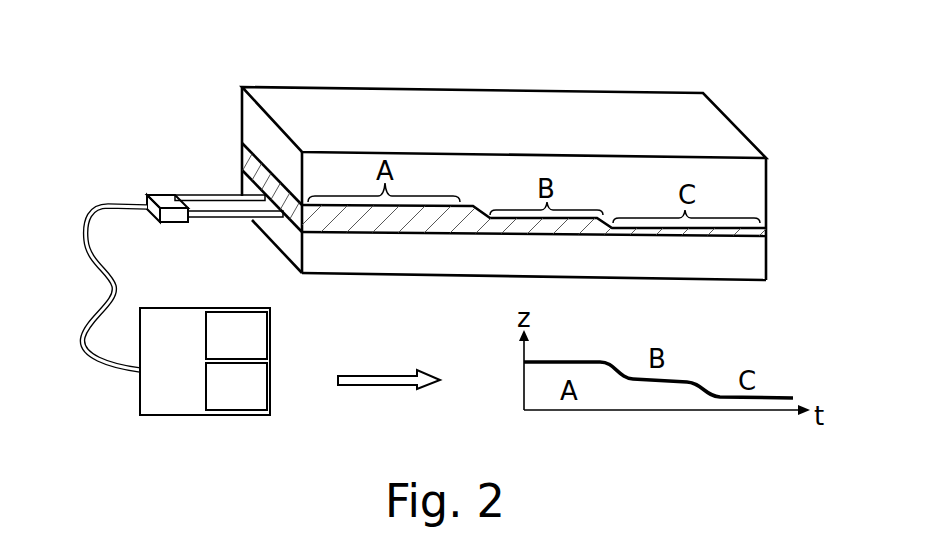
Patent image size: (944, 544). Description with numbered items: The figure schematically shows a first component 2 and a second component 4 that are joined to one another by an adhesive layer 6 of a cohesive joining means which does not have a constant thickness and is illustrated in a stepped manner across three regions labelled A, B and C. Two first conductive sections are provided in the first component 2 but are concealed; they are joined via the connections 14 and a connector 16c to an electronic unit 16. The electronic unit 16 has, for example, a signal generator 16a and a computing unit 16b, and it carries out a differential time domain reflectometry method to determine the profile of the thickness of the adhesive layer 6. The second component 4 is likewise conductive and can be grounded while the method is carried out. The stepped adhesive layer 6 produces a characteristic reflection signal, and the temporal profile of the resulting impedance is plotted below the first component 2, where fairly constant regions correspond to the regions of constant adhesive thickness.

The first component 2 is at (348, 257).
The second component 4 is at (390, 110).
The adhesive layer 6 is at (462, 218).
The connections 14 is at (217, 198).
The electronic unit 16 is at (165, 367).
The signal generator 16a is at (236, 386).
The computing unit 16b is at (236, 335).
The connector 16c is at (162, 186).